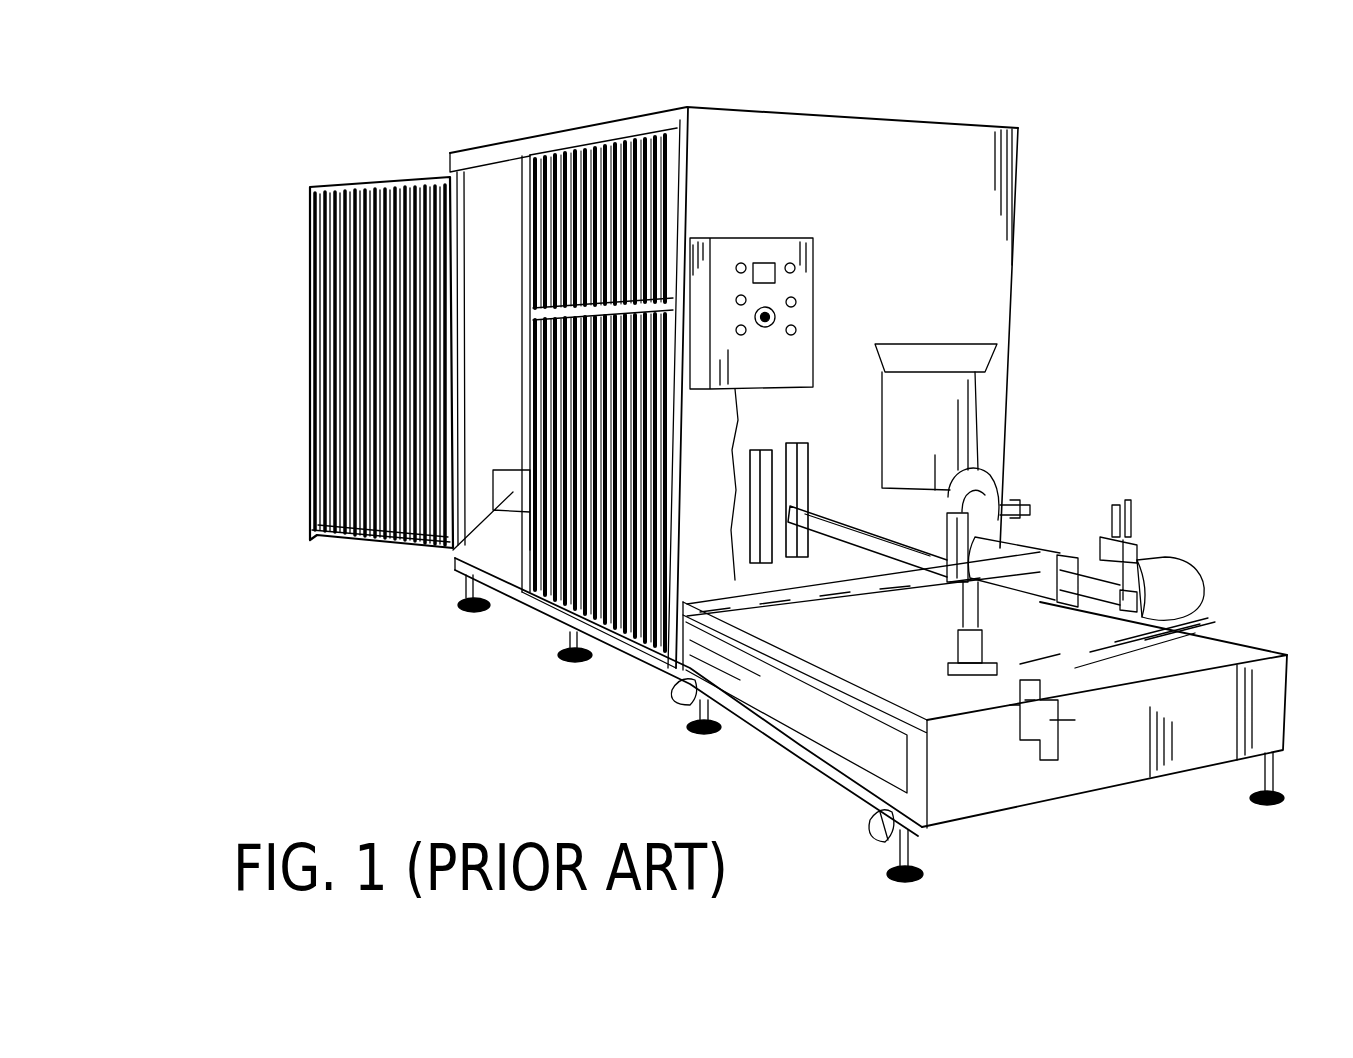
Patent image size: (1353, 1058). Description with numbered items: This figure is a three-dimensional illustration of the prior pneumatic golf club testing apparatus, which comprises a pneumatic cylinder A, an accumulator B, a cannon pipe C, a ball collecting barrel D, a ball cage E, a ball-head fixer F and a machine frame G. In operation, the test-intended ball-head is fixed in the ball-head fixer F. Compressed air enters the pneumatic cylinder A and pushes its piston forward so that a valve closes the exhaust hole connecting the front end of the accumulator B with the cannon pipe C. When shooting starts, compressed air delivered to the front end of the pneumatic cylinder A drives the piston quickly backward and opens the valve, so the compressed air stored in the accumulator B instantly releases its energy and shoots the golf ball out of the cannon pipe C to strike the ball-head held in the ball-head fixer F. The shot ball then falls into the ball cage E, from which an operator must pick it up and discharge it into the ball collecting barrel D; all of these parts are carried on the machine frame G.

The pneumatic cylinder A is at (1205, 594).
The accumulator B is at (1174, 568).
The cannon pipe C is at (872, 535).
The ball collecting barrel D is at (1000, 350).
The ball cage E is at (789, 112).
The ball-head fixer F is at (445, 552).
The machine frame G is at (607, 645).